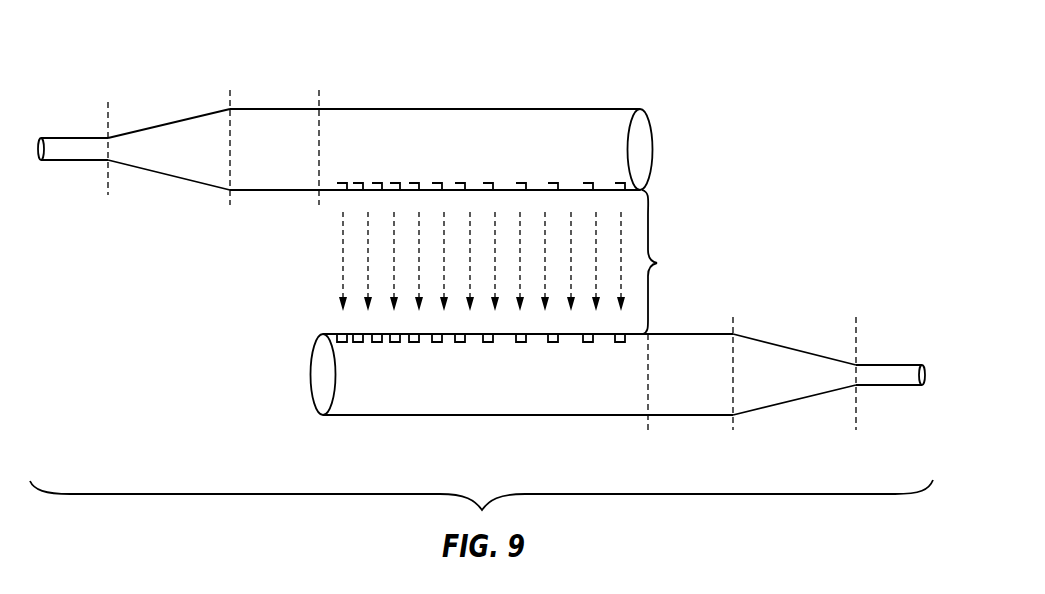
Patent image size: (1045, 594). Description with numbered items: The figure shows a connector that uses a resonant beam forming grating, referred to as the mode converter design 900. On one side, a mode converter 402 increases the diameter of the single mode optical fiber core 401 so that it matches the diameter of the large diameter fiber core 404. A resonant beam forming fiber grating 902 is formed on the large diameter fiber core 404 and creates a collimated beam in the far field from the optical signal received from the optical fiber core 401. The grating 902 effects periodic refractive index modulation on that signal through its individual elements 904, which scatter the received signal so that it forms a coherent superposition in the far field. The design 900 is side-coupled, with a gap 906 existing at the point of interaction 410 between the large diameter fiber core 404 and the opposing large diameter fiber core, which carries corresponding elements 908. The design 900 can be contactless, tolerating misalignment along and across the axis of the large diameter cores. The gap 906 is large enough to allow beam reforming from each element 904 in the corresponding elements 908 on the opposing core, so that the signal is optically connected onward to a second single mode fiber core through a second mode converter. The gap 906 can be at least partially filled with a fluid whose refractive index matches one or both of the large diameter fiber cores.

The mode converter design 900 is at (839, 63).
The single mode optical fiber core 401 is at (82, 160).
The mode converter 402 is at (168, 123).
The large diameter fiber core 404 is at (288, 108).
The resonant beam forming fiber grating 902 is at (530, 108).
The individual elements 904 is at (358, 191).
The point of interaction 410 is at (304, 258).
The gap 906 is at (673, 262).
The corresponding elements 908 is at (360, 333).